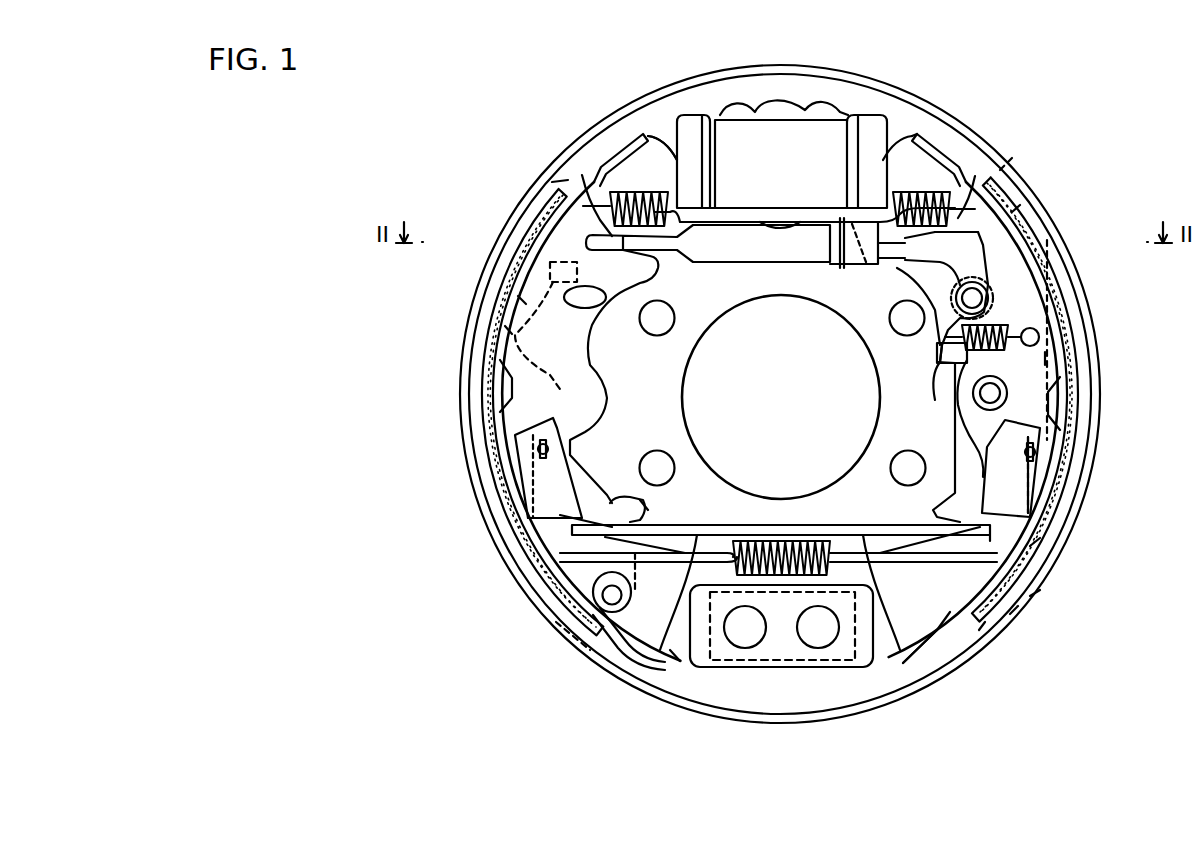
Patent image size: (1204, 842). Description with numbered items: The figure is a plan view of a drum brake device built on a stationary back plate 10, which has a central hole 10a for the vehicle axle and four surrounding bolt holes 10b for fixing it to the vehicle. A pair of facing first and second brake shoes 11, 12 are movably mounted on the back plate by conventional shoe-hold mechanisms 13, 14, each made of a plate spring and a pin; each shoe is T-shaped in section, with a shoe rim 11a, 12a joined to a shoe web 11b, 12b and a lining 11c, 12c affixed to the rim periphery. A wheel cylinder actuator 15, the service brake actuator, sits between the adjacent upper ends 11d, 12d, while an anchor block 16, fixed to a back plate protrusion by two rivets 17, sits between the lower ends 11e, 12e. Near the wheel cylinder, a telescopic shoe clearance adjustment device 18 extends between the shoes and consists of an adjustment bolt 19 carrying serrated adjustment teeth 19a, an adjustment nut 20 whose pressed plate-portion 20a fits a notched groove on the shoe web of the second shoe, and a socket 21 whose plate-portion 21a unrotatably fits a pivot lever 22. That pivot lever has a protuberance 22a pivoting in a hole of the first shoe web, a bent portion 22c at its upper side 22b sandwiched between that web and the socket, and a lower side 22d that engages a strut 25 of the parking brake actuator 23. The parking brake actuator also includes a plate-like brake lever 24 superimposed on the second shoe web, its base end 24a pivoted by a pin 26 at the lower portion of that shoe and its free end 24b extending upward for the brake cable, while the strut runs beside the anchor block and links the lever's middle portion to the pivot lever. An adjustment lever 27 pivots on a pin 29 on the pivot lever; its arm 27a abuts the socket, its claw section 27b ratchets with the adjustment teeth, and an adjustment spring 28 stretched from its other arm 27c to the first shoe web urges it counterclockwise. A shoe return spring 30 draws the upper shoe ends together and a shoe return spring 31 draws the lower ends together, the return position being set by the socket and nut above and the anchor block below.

The back plate 10 is at (1011, 151).
The central hole 10a is at (692, 428).
The bolt holes 10b is at (668, 322).
The first brake shoe 11 is at (1025, 196).
The shoe rim 11a is at (1035, 592).
The shoe web 11b is at (1015, 612).
The lining 11c is at (985, 625).
The upper end 11d is at (905, 142).
The lower end 11e is at (887, 652).
The second brake shoe 12 is at (465, 397).
The shoe rim 12a is at (510, 330).
The shoe web 12b is at (522, 300).
The lining 12c is at (550, 190).
The upper end 12d is at (652, 146).
The lower end 12e is at (667, 662).
The shoe-hold mechanism 13 is at (1040, 454).
The shoe-hold mechanism 14 is at (535, 452).
The wheel cylinder actuator 15 is at (760, 92).
The anchor block 16 is at (742, 680).
The rivets 17 is at (742, 630).
The shoe clearance adjustment device 18 is at (851, 220).
The adjustment bolt 19 is at (793, 265).
The serrated adjustment teeth 19a is at (828, 265).
The adjustment nut 20 is at (752, 264).
The plate-portion 20a is at (583, 242).
The socket 21 is at (866, 266).
The plate-portion 21a is at (1020, 205).
The pivot lever 22 is at (972, 440).
The protuberance 22a is at (1008, 390).
The upper side 22b is at (1052, 240).
The bent portion 22c is at (1012, 158).
The lower side 22d is at (1040, 538).
The parking brake actuator 23 is at (560, 535).
The brake lever 24 is at (638, 500).
The base end 24a is at (556, 622).
The free end 24b is at (532, 278).
The strut 25 is at (648, 640).
The pin 26 is at (608, 605).
The adjustment lever 27 is at (1000, 250).
The arm 27a is at (982, 226).
The claw section 27b is at (858, 228).
The other arm 27c is at (935, 400).
The adjustment spring 28 is at (1045, 358).
The pin 29 is at (1040, 337).
The shoe return spring 30 is at (948, 190).
The shoe return spring 31 is at (772, 668).